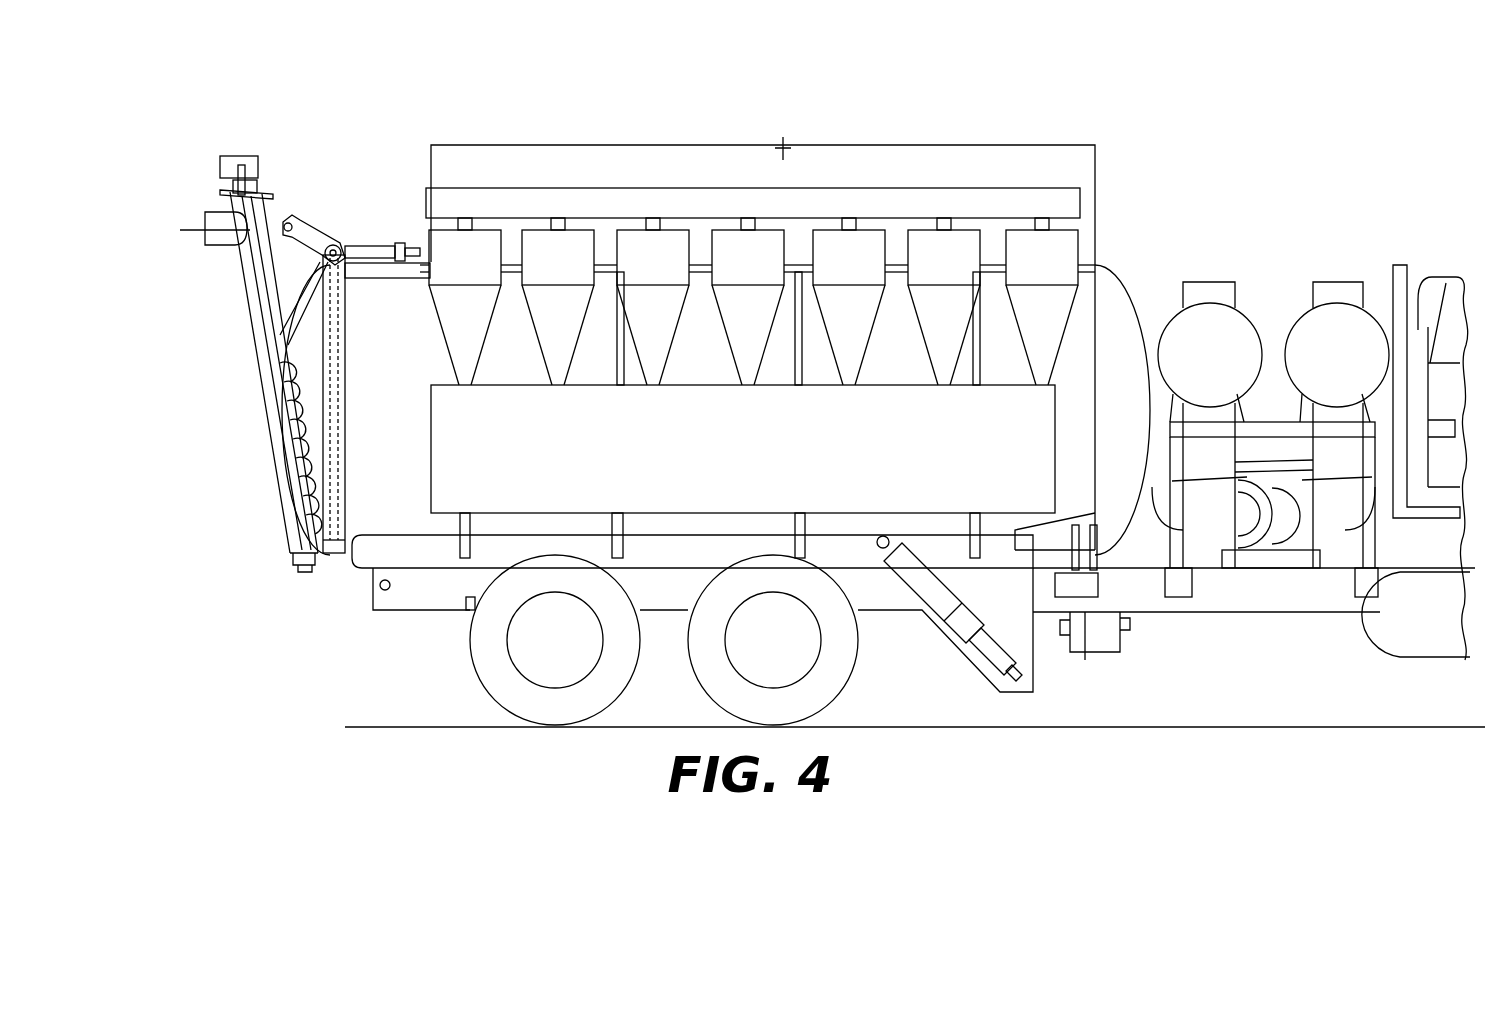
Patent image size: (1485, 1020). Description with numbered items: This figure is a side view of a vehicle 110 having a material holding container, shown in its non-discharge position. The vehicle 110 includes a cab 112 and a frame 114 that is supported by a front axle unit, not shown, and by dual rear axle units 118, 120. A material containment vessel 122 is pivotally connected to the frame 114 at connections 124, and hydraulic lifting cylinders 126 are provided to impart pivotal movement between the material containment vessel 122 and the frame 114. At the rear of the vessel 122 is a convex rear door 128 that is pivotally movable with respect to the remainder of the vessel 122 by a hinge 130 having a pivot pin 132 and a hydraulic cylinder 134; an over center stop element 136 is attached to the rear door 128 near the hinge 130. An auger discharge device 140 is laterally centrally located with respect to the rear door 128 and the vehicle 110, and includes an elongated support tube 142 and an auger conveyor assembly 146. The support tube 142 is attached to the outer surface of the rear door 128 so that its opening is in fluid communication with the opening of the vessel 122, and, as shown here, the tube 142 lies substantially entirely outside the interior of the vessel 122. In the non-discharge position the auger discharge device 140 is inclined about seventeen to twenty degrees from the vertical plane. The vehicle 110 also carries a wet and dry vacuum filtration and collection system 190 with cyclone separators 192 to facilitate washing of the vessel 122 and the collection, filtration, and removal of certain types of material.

The vehicle 110 is at (1260, 182).
The cab 112 is at (1438, 277).
The frame 114 is at (1155, 603).
The rear axle unit 118 is at (753, 655).
The rear axle unit 120 is at (536, 655).
The material containment vessel 122 is at (1087, 277).
The connections 124 is at (380, 588).
The hydraulic lifting cylinders 126 is at (950, 615).
The convex rear door 128 is at (292, 357).
The hinge 130 is at (330, 240).
The pivot pin 132 is at (345, 245).
The hydraulic cylinder 134 is at (378, 243).
The over center stop element 136 is at (297, 218).
The auger discharge device 140 is at (215, 274).
The elongated support tube 142 is at (242, 314).
The auger conveyor assembly 146 is at (300, 428).
The wet and dry vacuum filtration and collection system 190 is at (872, 192).
The cyclone separators 192 is at (478, 320).